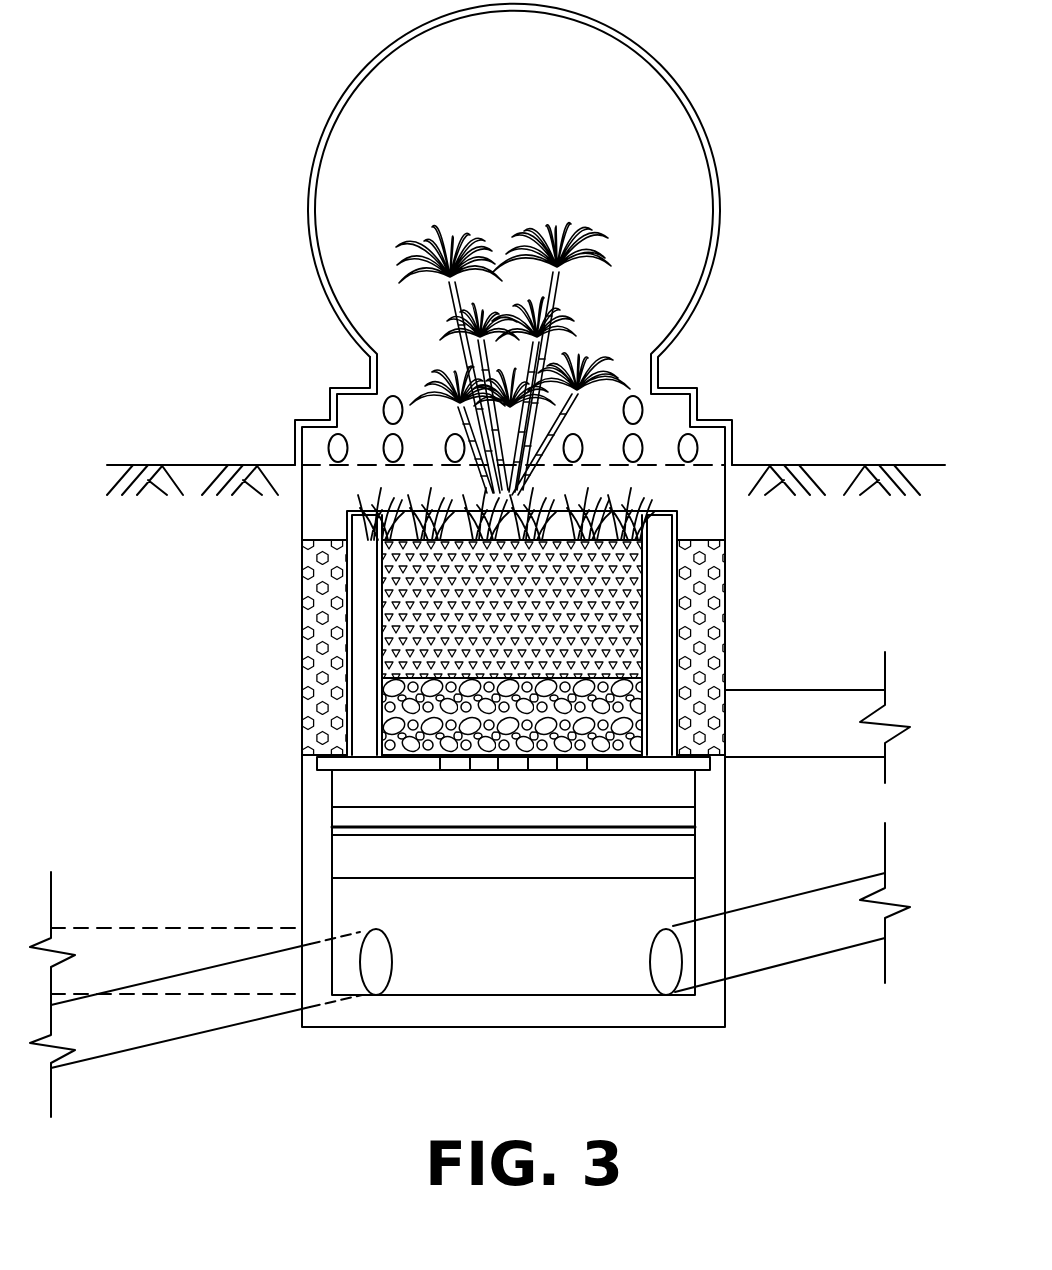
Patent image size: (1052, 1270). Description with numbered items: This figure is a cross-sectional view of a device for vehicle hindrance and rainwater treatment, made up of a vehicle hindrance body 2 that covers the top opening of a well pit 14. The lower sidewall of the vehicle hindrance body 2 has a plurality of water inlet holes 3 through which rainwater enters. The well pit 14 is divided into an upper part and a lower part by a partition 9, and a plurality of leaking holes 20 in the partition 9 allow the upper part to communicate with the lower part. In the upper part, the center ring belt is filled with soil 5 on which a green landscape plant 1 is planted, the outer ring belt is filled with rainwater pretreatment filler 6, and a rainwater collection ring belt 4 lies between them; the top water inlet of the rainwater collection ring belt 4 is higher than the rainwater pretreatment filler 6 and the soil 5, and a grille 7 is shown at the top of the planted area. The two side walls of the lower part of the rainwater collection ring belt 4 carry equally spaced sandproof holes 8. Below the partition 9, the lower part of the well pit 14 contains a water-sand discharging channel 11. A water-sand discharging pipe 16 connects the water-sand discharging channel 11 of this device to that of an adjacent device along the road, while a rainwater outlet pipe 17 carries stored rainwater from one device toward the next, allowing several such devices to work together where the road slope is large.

The green landscape plant 1 is at (470, 233).
The vehicle hindrance body 2 is at (720, 183).
The water inlet hole 3 is at (695, 448).
The rainwater collection ring belt 4 is at (658, 592).
The soil 5 is at (455, 635).
The rainwater pretreatment filler 6 is at (698, 632).
The grille 7 is at (345, 517).
The sandproof hole 8 is at (347, 732).
The partition 9 is at (362, 763).
The water-sand discharging channel 11 is at (433, 937).
The well pit 14 is at (588, 1027).
The water-sand discharging pipe 16 is at (215, 1032).
The rainwater outlet pipe 17 is at (102, 963).
The leaking hole 20 is at (573, 765).